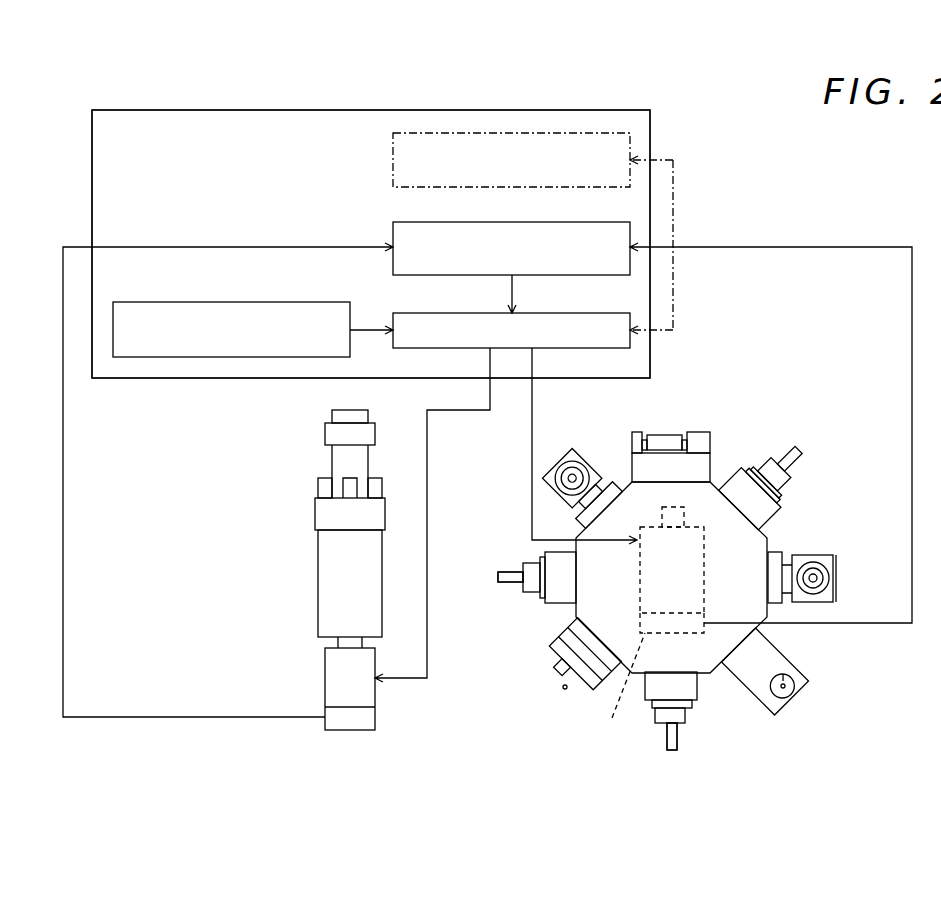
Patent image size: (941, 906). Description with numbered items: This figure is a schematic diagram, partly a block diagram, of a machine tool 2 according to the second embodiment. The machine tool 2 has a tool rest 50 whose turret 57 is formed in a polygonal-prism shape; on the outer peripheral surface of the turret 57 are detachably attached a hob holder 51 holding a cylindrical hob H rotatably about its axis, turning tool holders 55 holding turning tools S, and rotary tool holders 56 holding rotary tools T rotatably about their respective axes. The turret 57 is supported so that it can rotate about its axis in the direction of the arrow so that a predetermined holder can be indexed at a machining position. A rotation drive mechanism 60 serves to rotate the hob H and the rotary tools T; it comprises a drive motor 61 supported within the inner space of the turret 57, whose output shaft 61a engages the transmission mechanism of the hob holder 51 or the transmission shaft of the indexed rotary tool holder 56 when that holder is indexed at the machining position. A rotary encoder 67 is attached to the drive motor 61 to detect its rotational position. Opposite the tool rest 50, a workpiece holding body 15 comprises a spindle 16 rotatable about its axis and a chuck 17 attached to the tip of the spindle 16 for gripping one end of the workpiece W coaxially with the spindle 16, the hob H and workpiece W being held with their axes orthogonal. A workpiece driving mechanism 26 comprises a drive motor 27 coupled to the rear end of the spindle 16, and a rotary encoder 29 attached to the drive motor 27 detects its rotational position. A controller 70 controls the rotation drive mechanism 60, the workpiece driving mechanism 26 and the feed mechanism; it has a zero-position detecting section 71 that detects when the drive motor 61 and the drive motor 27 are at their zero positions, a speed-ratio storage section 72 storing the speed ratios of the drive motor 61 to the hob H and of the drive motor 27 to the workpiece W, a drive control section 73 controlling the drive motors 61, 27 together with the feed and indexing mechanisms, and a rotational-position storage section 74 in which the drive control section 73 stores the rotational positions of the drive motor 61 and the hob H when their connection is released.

The machine tool 2 is at (34, 170).
The controller 70 is at (650, 200).
The zero-position detecting section 71 is at (393, 232).
The speed-ratio storage section 72 is at (296, 302).
The drive control section 73 is at (630, 325).
The rotational-position storage section 74 is at (393, 156).
The workpiece holding body 15 is at (271, 553).
The spindle 16 is at (322, 602).
The chuck 17 is at (322, 515).
The workpiece driving mechanism 26 is at (350, 689).
The drive motor 27 is at (333, 688).
The rotary encoder 29 is at (367, 720).
The workpiece W is at (335, 418).
The tool rest 50 is at (671, 577).
The turret 57 is at (576, 612).
The hob holder 51 is at (698, 443).
The hob H is at (668, 440).
The turning tool holders 55 is at (560, 668).
The rotary tool holders 56 is at (586, 448).
The rotary tools T is at (572, 478).
The turning tools S is at (560, 692).
The rotation drive mechanism 60 is at (672, 580).
The drive motor 61 is at (698, 567).
The output shaft 61a is at (684, 507).
The rotary encoder 67 is at (622, 688).